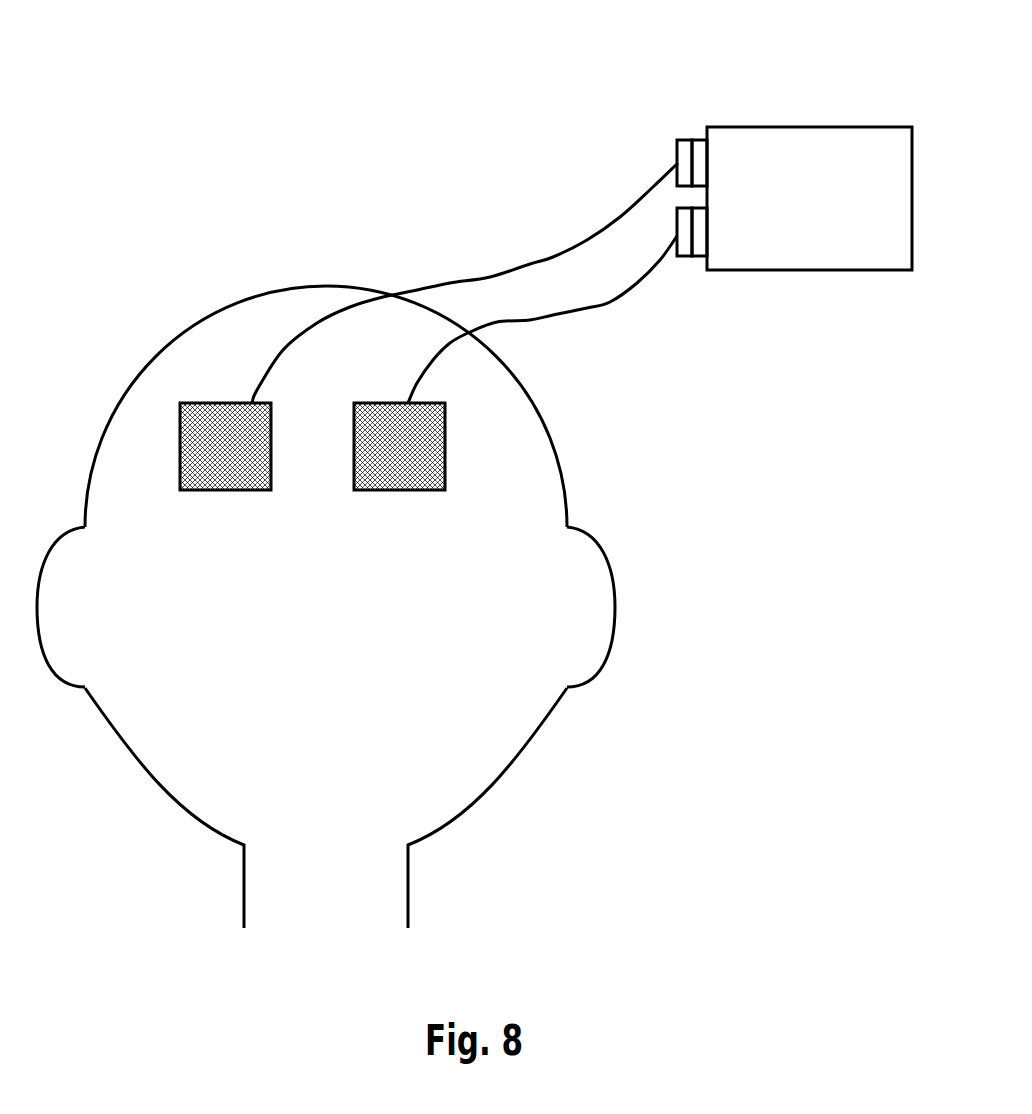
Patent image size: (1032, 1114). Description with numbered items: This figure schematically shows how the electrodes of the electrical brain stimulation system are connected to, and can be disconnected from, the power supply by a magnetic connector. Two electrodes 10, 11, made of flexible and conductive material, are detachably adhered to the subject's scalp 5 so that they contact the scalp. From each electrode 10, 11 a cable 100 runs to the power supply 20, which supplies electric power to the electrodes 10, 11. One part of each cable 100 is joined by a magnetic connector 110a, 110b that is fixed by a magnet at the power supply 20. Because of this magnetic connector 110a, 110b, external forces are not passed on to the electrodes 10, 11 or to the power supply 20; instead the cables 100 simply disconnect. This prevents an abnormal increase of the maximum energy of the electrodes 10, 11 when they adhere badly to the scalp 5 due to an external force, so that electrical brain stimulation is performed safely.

The scalp 5 is at (513, 471).
The electrode 10 is at (225, 492).
The electrode 11 is at (402, 492).
The cable 100 is at (608, 303).
The magnetic connector 110a is at (678, 140).
The magnetic connector 110b is at (700, 138).
The power supply 20 is at (860, 272).